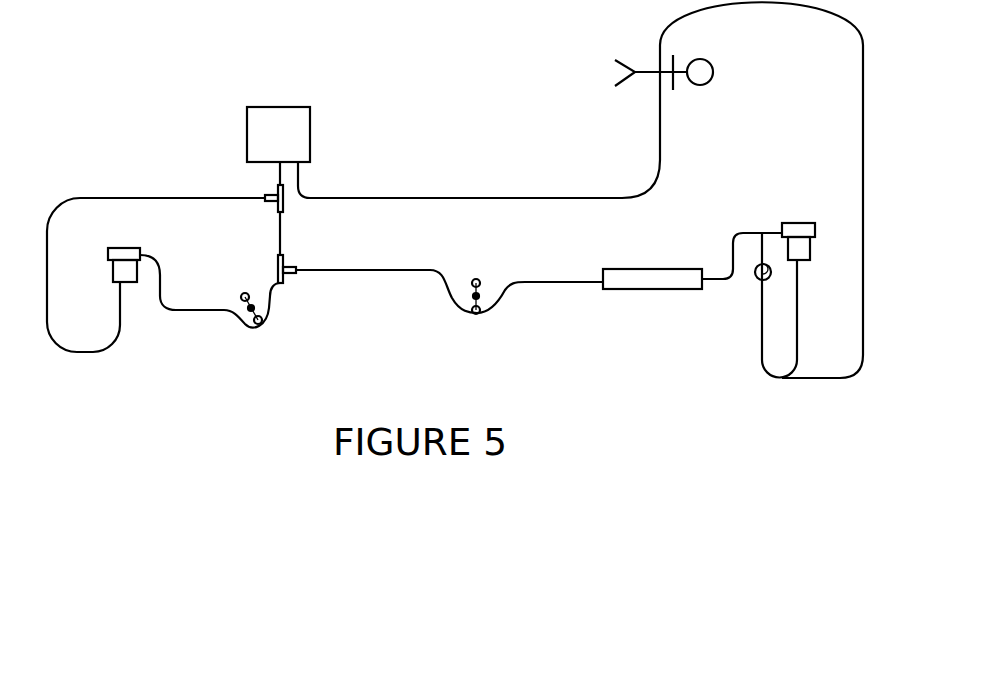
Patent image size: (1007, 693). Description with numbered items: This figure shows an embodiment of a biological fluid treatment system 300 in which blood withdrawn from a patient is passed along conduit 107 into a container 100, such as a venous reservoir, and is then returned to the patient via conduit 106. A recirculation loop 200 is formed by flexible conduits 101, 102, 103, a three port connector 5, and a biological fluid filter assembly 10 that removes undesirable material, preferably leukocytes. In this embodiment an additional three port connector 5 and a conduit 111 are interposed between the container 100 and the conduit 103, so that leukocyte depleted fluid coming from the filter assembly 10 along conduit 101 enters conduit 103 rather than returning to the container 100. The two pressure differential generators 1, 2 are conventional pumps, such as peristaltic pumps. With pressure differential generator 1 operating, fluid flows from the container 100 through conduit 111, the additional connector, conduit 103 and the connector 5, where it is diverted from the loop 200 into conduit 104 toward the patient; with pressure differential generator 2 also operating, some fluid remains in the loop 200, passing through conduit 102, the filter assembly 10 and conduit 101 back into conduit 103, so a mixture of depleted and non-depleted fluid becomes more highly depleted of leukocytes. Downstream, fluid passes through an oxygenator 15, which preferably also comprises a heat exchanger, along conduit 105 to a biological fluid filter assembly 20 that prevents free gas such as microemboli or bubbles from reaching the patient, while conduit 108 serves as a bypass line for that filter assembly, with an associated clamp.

The pressure differential generator 1 is at (476, 279).
The pressure differential generator 2 is at (245, 295).
The connector 5 is at (283, 200).
The biological fluid filter assembly 10 is at (108, 253).
The oxygenator 15 is at (643, 290).
The biological fluid filter assembly 20 is at (800, 222).
The container 100 is at (310, 122).
The conduit 101 is at (165, 198).
The conduit 102 is at (207, 313).
The conduit 103 is at (278, 232).
The conduit 104 is at (375, 272).
The conduit 105 is at (735, 291).
The conduit 106 is at (862, 78).
The conduit 107 is at (465, 197).
The conduit 108 is at (783, 378).
The conduit 111 is at (277, 180).
The recirculation loop 200 is at (210, 272).
The biological fluid treatment system 300 is at (828, 467).